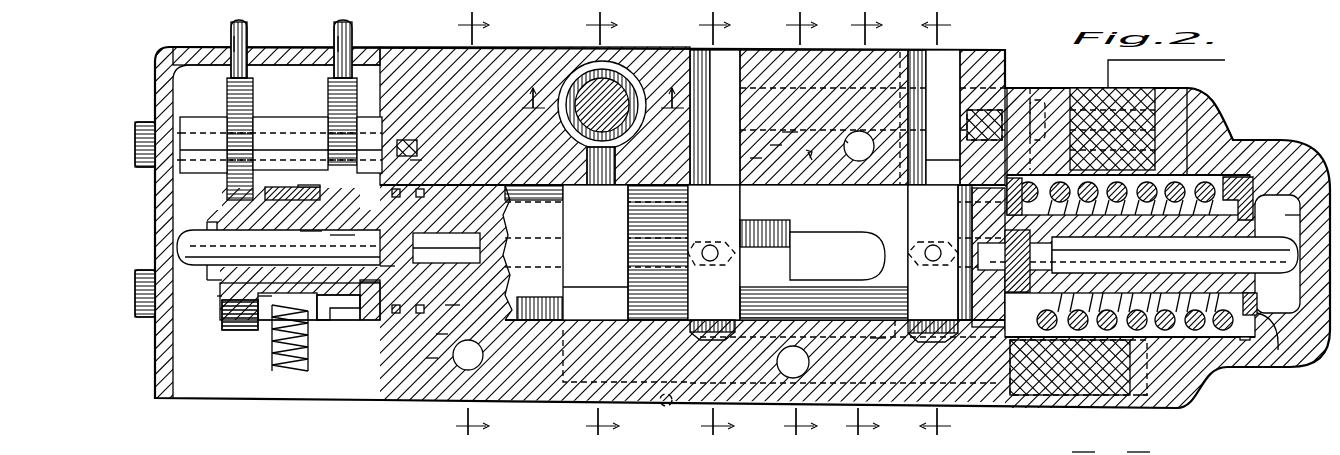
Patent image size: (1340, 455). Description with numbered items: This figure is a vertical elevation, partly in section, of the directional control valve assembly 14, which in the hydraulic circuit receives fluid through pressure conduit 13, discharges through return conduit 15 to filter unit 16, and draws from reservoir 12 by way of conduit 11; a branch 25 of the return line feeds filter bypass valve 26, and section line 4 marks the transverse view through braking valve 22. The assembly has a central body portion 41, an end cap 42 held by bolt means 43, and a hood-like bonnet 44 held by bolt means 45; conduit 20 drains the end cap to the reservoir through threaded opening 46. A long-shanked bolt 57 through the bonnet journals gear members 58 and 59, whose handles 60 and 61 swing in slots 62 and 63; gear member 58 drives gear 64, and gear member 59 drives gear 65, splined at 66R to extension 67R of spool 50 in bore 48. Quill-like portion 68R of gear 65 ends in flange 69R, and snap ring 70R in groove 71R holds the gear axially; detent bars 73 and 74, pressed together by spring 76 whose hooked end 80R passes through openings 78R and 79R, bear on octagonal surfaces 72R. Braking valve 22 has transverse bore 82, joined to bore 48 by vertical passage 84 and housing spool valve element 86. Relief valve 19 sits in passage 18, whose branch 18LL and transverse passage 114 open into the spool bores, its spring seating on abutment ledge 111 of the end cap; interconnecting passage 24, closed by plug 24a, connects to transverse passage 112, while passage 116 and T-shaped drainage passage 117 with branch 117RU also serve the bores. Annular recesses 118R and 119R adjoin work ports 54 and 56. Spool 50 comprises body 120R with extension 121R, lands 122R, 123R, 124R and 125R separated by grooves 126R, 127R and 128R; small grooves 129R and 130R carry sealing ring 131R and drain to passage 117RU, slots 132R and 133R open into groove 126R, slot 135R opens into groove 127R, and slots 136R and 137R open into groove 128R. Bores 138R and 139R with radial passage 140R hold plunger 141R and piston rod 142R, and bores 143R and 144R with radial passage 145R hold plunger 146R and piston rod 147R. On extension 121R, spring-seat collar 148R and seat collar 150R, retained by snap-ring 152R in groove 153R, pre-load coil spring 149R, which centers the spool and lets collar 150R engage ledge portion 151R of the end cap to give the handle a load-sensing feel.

The section line 4- 4 is at (597, 109).
The conduit 11 is at (482, 227).
The reservoir 12 is at (612, 227).
The pressure conduit 13 is at (727, 227).
The directional control valve assembly 14 is at (528, 22).
The return conduit 15 is at (944, 229).
The filter unit 16 is at (950, 227).
The interconnecting passage 18 is at (667, 404).
The diagonal branch 18LL is at (594, 356).
The relief valve 19 is at (1072, 392).
The conduit 20 is at (1180, 62).
The braking or anti-cavitation valve 22 is at (561, 73).
The interconnecting fluid passage 24 is at (826, 85).
The closure plug 24a is at (1032, 88).
The branch 25 is at (1081, 452).
The filter bypass valve 26 is at (1136, 452).
The central body portion 41 is at (998, 62).
The end cap 42 is at (1198, 117).
The bolt means 43 is at (1040, 90).
The bonnet 44 is at (272, 47).
The bolt means 45 is at (152, 320).
The threaded opening 46 is at (1138, 90).
The bore 48 is at (766, 185).
The valve spool element 50 is at (845, 140).
The work port 54 is at (700, 55).
The work port 56 is at (918, 56).
The long-shanked bolt 57 is at (150, 122).
The gear member 58 is at (254, 95).
The gear member 59 is at (330, 96).
The operating control handle 60 is at (237, 26).
The operating control handle 61 is at (354, 24).
The slot 62 is at (234, 44).
The slot 63 is at (338, 42).
The gear 64 is at (225, 182).
The gear 65 is at (344, 320).
The splining 66R is at (278, 247).
The reduced-diametered end section 67R is at (339, 243).
The quill-like portion 68R is at (268, 298).
The flange 69R is at (218, 298).
The snap ring 70R is at (220, 288).
The annular groove 71R is at (218, 276).
The octagonal surface 72R is at (240, 330).
The detent member 73 is at (310, 185).
The detent member 74 is at (320, 320).
The spring 76 is at (282, 370).
The opening 78R is at (312, 230).
The opening 79R is at (282, 257).
The hooked terminus 80R is at (290, 185).
The transverse bore 82 is at (566, 133).
The vertical passage 84 is at (622, 142).
The spool valve element 86 is at (632, 76).
The abutment ledge 111 is at (1143, 396).
The transverse passage 112 is at (866, 130).
The transverse passage 114 is at (806, 355).
The transverse passage 116 is at (480, 350).
The drainage passage 117 is at (408, 215).
The transverse branch 117RU is at (422, 160).
The annular recess 118R is at (756, 156).
The annular recess 119R is at (936, 117).
The body member 120R is at (713, 185).
The reduced diametered extension 121R is at (1135, 215).
The land 122R is at (462, 183).
The land 123R is at (640, 168).
The land 124R is at (812, 160).
The land 125R is at (985, 188).
The groove 126R is at (576, 185).
The groove 127R is at (775, 142).
The groove 128R is at (920, 183).
The annular groove 129R is at (430, 360).
The annular groove 130R is at (442, 336).
The fluid-sealing ring member 131R is at (420, 152).
The slot-like recess 132R is at (578, 208).
The slot-like recess 133R is at (565, 300).
The slot-like recess 135R is at (830, 276).
The slot-like recess 136R is at (878, 340).
The slot-like recess 137R is at (790, 130).
The bore 138R is at (384, 266).
The bore 139R is at (452, 305).
The radial passage 140R is at (716, 261).
The plunger 141R is at (190, 222).
The piston rod 142R is at (413, 246).
The bore 143R is at (1158, 273).
The bore 144R is at (1000, 272).
The radial passage 145R is at (942, 238).
The plunger 146R is at (1290, 215).
The piston rod 147R is at (1056, 252).
The spring-seat collar 148R is at (1014, 178).
The coil spring 149R is at (1158, 174).
The seat collar 150R is at (1250, 178).
The ledge portion 151R is at (1245, 340).
The snap-ring 152R is at (1265, 318).
The annular groove 153R is at (1275, 252).